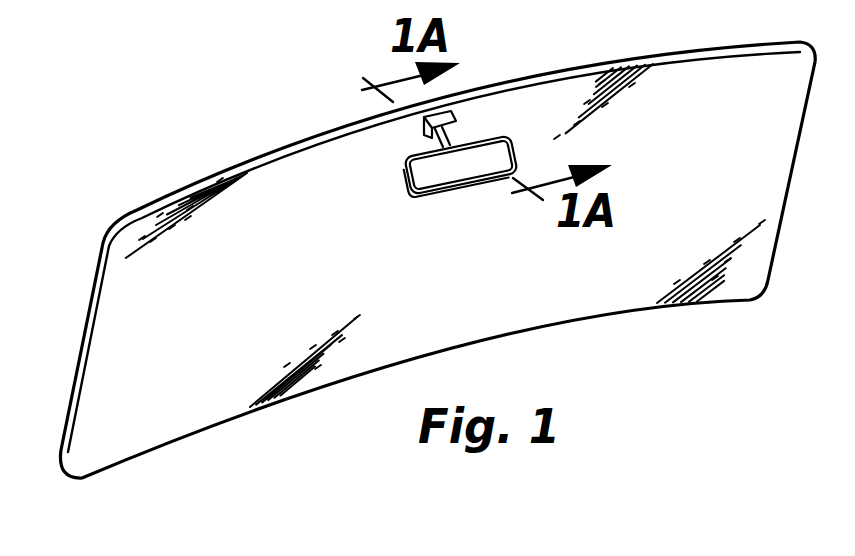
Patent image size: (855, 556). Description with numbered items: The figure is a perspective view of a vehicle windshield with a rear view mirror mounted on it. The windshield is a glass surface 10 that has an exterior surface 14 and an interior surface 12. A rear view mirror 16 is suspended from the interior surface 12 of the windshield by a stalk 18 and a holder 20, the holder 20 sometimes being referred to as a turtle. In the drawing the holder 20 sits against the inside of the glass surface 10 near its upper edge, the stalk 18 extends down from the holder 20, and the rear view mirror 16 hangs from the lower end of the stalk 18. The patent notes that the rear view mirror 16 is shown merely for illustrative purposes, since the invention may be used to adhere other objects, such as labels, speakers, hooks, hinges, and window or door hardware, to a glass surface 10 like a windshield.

The glass surface 10 is at (421, 279).
The interior surface 12 is at (135, 432).
The exterior surface 14 is at (72, 390).
The rear view mirror 16 is at (447, 180).
The stalk 18 is at (454, 136).
The holder 20 is at (424, 128).